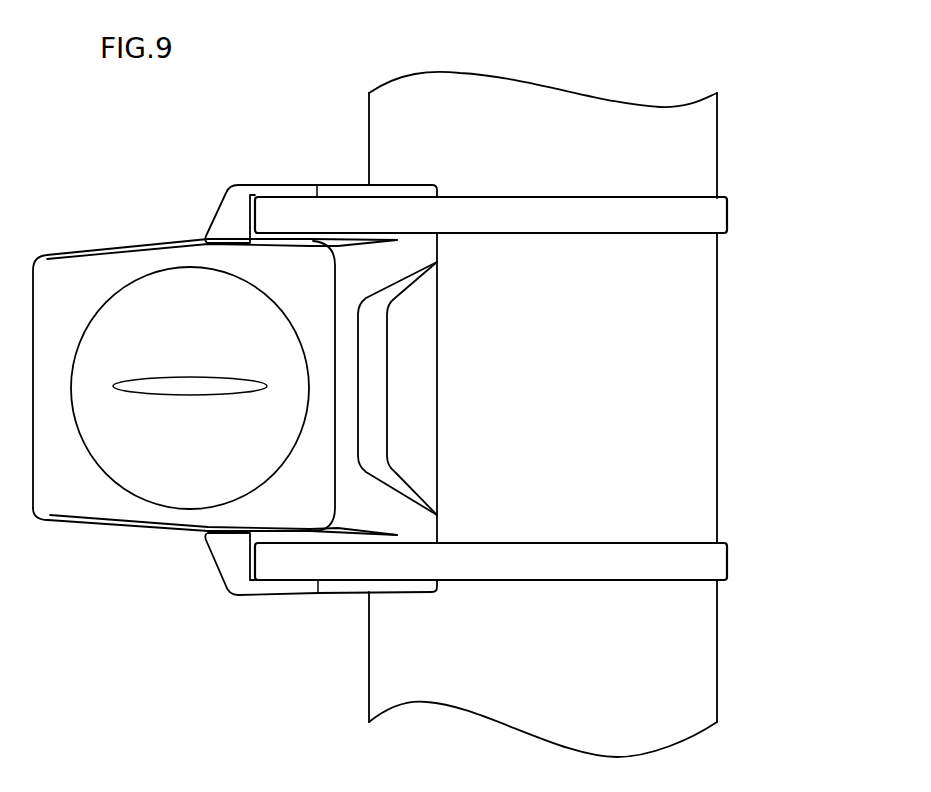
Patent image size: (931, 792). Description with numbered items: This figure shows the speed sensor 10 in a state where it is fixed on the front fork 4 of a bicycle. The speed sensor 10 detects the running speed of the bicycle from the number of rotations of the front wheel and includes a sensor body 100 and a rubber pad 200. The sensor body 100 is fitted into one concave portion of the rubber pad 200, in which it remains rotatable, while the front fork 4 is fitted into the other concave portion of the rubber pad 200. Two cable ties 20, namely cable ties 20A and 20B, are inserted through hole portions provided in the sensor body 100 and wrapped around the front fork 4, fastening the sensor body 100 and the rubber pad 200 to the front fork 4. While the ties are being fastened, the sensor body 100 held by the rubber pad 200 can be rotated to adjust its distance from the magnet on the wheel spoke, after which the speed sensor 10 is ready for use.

The front fork 4 is at (675, 662).
The speed sensor 10 is at (101, 160).
The cable ties 20 is at (551, 388).
The cable tie 20A is at (653, 218).
The cable tie 20B is at (526, 509).
The sensor body 100 is at (108, 532).
The rubber pad 200 is at (357, 502).